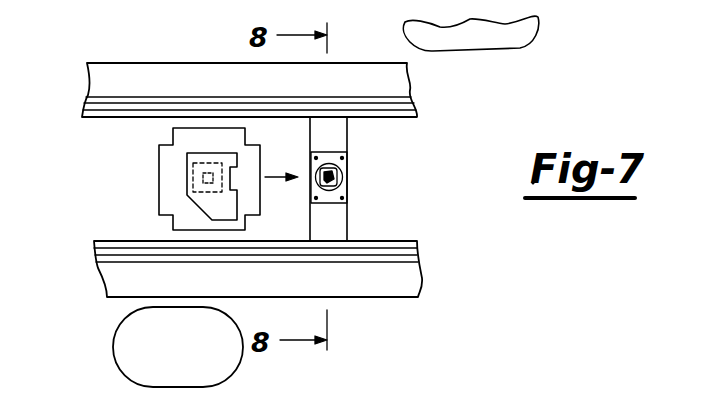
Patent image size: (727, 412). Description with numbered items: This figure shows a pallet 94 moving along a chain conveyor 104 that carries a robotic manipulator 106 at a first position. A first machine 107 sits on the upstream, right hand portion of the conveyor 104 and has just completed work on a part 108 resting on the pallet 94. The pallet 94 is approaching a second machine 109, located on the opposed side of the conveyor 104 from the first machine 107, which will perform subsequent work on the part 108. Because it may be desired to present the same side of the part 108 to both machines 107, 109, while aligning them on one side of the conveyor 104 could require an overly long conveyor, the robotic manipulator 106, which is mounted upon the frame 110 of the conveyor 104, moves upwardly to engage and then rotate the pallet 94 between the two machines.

The pallet 94 is at (173, 171).
The conveyor 104 is at (426, 136).
The robotic manipulator 106 is at (360, 173).
The first machine 107 is at (123, 345).
The part 108 is at (212, 200).
The second machine 109 is at (513, 42).
The frame 110 is at (333, 222).